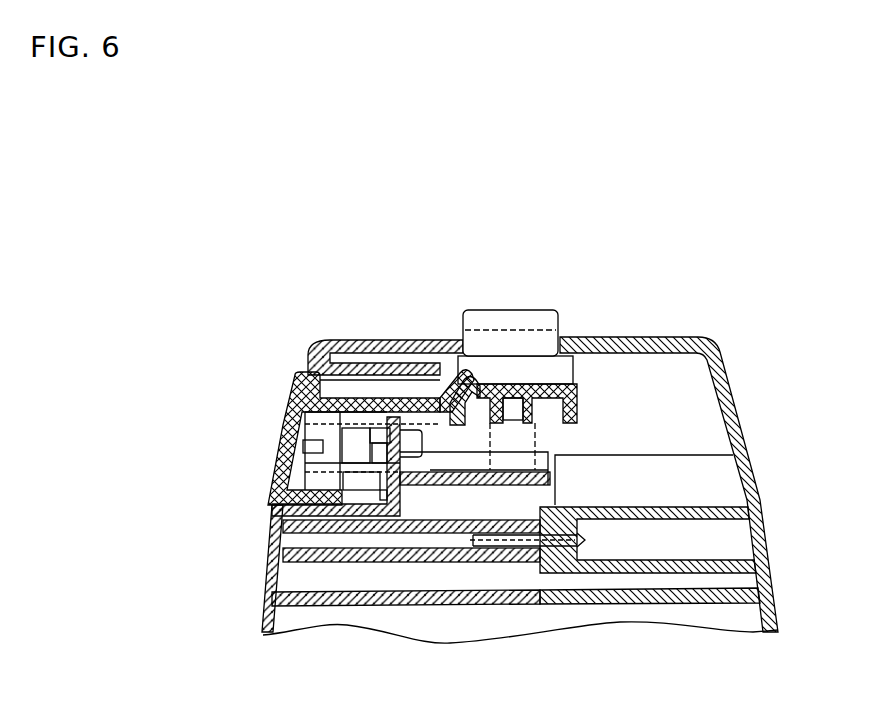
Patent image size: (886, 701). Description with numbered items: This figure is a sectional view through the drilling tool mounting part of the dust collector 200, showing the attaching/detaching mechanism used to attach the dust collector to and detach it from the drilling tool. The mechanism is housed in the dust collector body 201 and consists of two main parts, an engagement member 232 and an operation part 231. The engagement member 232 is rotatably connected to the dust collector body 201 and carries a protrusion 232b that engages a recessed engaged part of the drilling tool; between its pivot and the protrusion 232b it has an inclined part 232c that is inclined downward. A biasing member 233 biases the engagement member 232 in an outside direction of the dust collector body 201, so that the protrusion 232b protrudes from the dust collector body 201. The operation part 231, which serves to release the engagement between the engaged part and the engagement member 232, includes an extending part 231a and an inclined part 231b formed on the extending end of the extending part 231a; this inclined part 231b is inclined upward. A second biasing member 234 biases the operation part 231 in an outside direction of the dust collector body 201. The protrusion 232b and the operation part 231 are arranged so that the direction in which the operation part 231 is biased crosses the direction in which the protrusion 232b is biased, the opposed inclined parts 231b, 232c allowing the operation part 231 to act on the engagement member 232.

The dust collector 200 is at (223, 324).
The dust collector body 201 is at (757, 463).
The operation part 231 is at (275, 446).
The extending part 231a is at (353, 402).
The inclined part 231b is at (446, 398).
The engagement member 232 is at (561, 330).
The protrusion 232b is at (507, 316).
The inclined part 232c is at (455, 386).
The biasing member 233 is at (540, 440).
The biasing member 234 is at (347, 467).